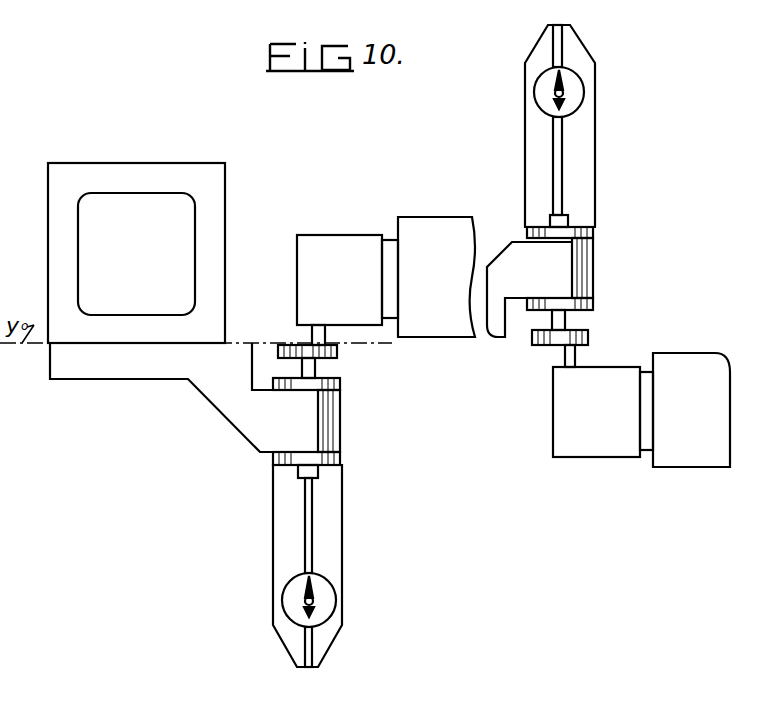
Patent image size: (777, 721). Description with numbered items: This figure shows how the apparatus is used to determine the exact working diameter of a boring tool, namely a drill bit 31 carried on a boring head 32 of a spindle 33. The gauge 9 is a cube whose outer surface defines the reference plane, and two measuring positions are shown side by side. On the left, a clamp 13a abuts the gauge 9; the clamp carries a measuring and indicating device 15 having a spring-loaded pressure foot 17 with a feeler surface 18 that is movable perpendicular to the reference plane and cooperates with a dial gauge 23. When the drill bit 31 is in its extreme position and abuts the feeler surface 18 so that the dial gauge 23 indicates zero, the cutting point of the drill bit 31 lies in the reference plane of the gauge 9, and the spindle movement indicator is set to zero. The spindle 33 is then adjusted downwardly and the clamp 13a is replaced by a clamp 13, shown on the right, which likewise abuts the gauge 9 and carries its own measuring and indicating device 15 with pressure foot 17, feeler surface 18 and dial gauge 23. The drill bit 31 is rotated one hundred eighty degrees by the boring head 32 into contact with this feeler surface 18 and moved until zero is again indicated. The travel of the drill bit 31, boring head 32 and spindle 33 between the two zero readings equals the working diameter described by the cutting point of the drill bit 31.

The gauge 9 is at (112, 210).
The clamp 13 is at (616, 261).
The clamp 13a is at (179, 405).
The measuring and indicating device 15 is at (366, 527).
The pressure foot 17 is at (308, 368).
The feeler surface 18 is at (292, 345).
The dial gauge 23 is at (322, 596).
The drill bit 31 is at (329, 337).
The boring head 32 is at (310, 250).
The spindle 33 is at (436, 240).